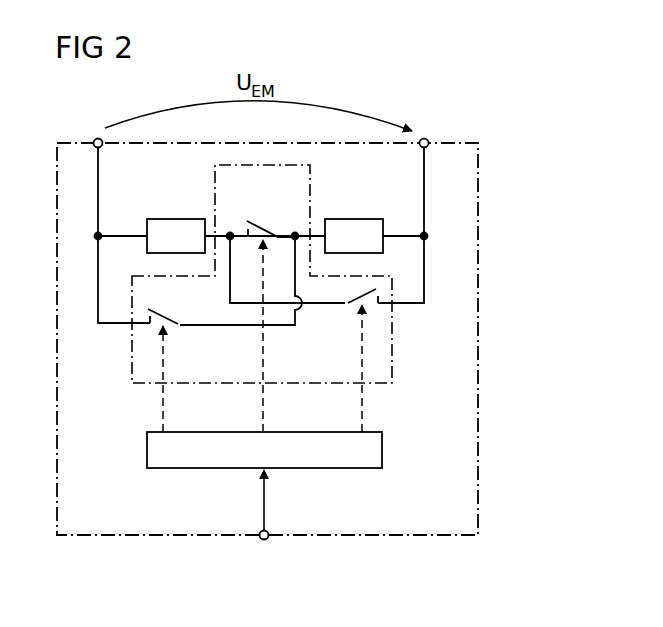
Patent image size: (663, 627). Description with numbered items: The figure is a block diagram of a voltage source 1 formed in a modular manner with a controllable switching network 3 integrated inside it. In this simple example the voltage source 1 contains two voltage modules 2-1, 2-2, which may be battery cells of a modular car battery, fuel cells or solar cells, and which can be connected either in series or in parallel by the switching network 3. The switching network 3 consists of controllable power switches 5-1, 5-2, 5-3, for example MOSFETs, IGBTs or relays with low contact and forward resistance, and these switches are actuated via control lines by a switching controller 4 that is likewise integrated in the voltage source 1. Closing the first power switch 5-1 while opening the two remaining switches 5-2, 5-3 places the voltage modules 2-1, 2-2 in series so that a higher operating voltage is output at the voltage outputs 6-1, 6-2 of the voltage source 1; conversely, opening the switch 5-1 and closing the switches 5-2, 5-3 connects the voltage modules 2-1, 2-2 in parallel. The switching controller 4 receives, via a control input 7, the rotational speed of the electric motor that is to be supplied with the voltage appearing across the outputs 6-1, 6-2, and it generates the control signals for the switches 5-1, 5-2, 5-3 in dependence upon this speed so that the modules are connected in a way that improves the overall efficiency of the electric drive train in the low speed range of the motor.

The voltage source formed in a modular manner 1 is at (478, 331).
The first voltage module 2-1 is at (178, 218).
The second voltage module 2-2 is at (349, 218).
The switching network 3 is at (393, 357).
The switching controller 4 is at (383, 447).
The first power switch 5-1 is at (256, 220).
The second switch 5-2 is at (175, 328).
The third switch 5-3 is at (352, 305).
The first voltage output 6-1 is at (98, 138).
The second voltage output 6-2 is at (424, 138).
The control input 7 is at (264, 540).